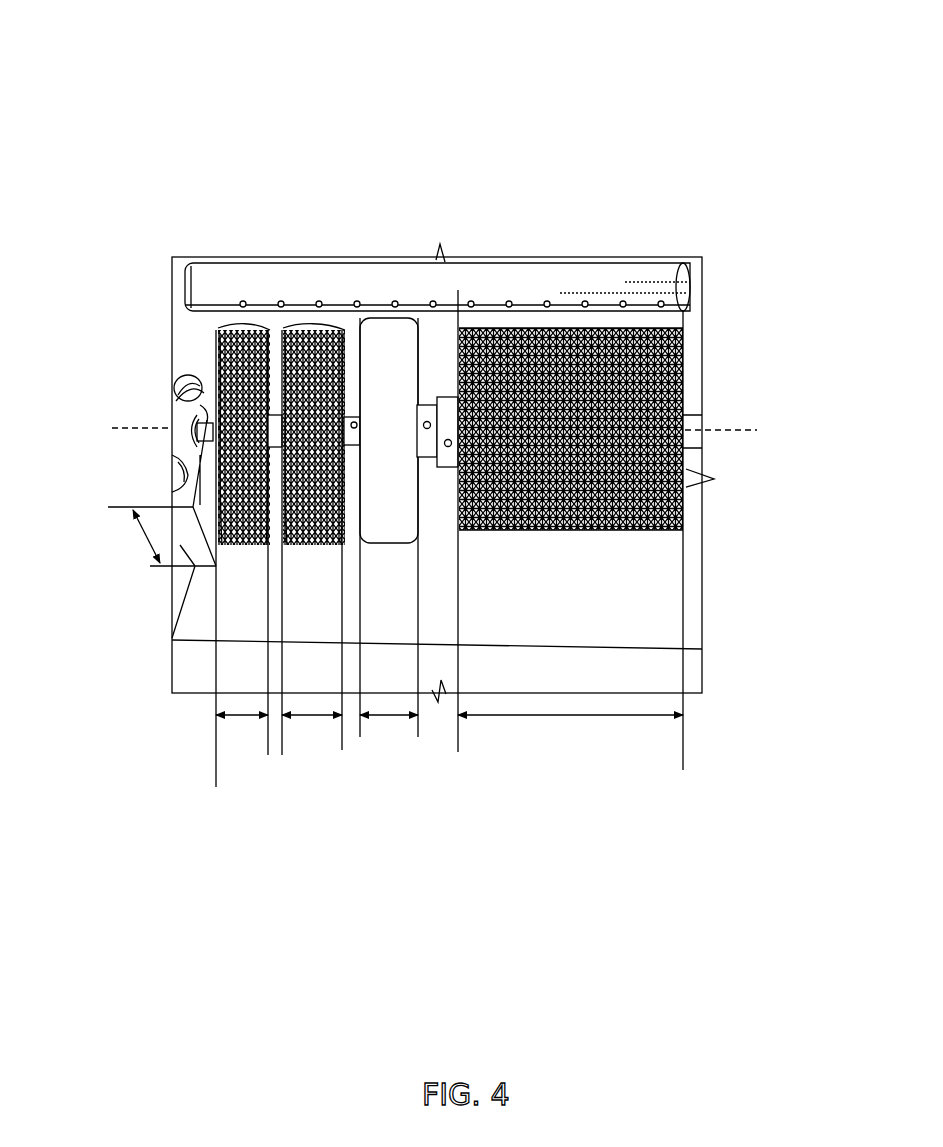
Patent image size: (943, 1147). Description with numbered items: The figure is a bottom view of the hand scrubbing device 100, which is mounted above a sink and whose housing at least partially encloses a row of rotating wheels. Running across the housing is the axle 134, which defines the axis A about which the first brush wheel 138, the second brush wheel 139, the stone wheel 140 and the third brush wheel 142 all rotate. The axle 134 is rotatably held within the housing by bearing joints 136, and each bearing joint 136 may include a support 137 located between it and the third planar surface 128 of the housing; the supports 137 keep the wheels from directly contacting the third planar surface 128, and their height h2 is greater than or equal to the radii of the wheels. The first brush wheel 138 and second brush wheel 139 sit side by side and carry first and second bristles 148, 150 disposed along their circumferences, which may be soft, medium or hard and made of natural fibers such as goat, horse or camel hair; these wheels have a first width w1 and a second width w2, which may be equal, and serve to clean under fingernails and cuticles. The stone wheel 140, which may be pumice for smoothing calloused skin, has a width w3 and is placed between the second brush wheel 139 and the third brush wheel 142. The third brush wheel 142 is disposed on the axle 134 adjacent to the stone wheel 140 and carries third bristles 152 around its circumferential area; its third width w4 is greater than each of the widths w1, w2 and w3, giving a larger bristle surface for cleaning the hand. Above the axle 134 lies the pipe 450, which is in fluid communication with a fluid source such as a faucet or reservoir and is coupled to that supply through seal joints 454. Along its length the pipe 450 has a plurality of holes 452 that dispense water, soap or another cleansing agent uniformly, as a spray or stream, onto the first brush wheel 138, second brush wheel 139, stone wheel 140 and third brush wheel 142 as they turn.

The scrubbing device 100 is at (246, 92).
The third planar surface 128 is at (690, 566).
The axle 134 is at (178, 396).
The bearing joints 136 is at (185, 440).
The support 137 is at (182, 498).
The first brush wheel 138 is at (276, 370).
The second brush wheel 139 is at (347, 370).
The stone wheel 140 is at (400, 330).
The third brush wheel 142 is at (462, 335).
The first bristles 148 is at (215, 333).
The second bristles 150 is at (302, 323).
The third bristles 152 is at (683, 337).
The pipe 450 is at (583, 283).
The holes 452 is at (437, 280).
The seal joints 454 is at (210, 282).
The axis A is at (434, 418).
The height of the supports h2 is at (147, 538).
The first width w1 is at (247, 718).
The second width w2 is at (310, 718).
The width of the stone wheel w3 is at (392, 718).
The third width w4 is at (577, 718).